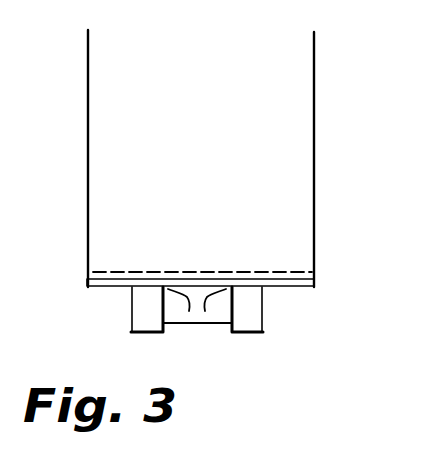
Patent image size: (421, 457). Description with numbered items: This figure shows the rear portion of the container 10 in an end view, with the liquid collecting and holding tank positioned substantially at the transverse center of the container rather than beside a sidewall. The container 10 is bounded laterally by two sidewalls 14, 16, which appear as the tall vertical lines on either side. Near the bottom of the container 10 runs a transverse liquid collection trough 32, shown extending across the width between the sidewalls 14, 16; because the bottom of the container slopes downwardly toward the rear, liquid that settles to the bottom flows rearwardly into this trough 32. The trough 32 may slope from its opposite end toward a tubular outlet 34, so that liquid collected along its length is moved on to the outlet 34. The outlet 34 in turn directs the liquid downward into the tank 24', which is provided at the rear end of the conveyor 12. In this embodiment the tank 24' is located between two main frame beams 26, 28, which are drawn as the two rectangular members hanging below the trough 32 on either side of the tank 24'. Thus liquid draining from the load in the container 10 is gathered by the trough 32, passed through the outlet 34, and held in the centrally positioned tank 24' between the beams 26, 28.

The container 10 is at (88, 143).
The conveyor 12 is at (182, 272).
The sidewall 14 is at (88, 70).
The sidewall 16 is at (315, 73).
The liquid collection and holding tank 24' is at (226, 341).
The main frame beam 26 is at (132, 320).
The main frame beam 28 is at (257, 310).
The transverse liquid collection trough 32 is at (177, 296).
The tubular outlet 34 is at (198, 310).